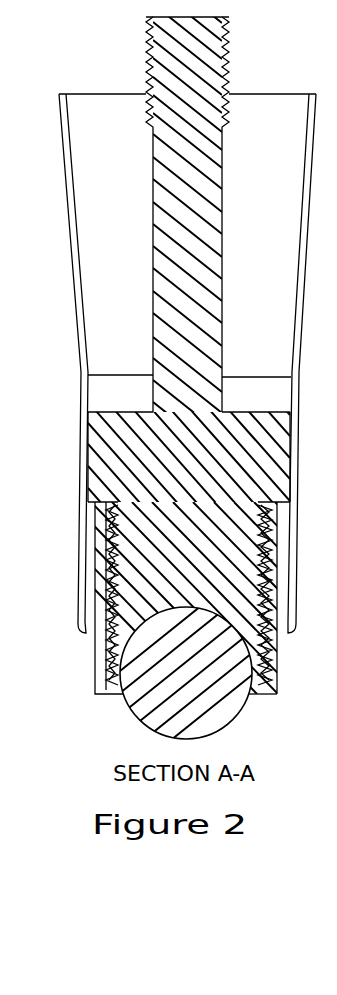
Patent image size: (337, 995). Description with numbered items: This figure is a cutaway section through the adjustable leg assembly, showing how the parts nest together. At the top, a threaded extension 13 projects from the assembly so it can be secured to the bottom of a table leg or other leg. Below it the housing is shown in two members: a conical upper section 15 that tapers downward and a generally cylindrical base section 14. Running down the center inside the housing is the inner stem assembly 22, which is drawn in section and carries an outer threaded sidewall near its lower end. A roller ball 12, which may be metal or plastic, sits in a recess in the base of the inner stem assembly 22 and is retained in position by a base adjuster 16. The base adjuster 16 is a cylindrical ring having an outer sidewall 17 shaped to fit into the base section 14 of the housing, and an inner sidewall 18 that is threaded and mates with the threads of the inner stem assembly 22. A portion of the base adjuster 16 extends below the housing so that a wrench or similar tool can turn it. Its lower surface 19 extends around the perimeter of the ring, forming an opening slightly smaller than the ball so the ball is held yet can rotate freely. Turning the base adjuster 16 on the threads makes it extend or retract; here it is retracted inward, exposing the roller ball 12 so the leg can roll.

The roller ball 12 is at (242, 712).
The threaded extension 13 is at (149, 50).
The base section 14 is at (82, 470).
The conical upper section 15 is at (69, 240).
The base adjuster 16 is at (95, 662).
The outer sidewall 17 is at (278, 667).
The inner sidewall 18 is at (105, 588).
The lower surface 19 is at (272, 694).
The inner stem assembly 22 is at (152, 300).